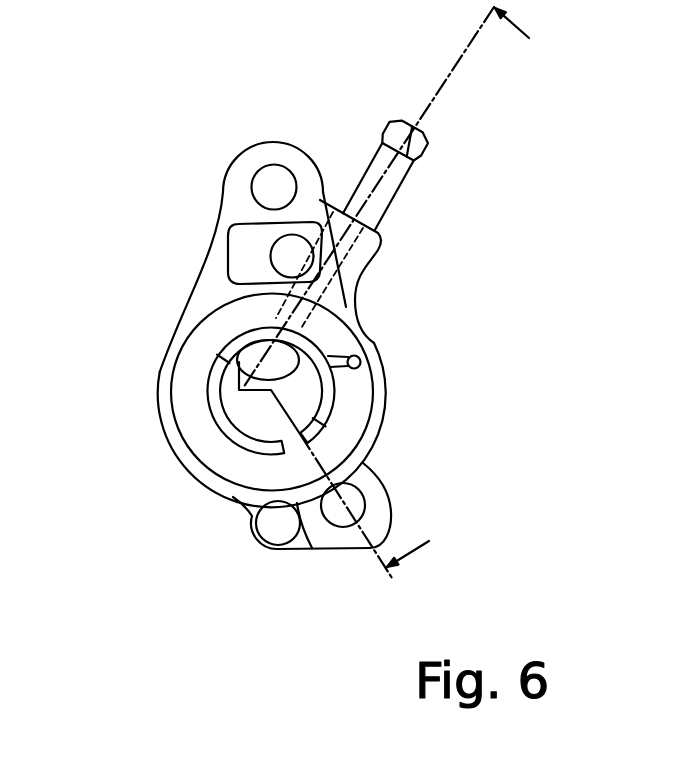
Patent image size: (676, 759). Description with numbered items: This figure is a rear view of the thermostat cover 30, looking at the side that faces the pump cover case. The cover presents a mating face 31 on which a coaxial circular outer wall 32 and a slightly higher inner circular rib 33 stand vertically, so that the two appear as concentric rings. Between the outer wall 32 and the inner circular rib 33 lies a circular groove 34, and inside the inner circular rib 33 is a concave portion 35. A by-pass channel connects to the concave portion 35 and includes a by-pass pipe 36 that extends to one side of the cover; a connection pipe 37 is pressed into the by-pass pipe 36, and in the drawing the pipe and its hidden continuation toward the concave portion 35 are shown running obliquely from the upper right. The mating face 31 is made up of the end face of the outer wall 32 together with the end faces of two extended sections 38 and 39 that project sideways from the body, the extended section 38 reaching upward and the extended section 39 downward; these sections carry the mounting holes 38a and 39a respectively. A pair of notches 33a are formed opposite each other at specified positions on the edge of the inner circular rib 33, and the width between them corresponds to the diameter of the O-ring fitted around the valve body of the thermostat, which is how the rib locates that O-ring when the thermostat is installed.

The thermostat cover 30 is at (172, 167).
The mating face 31 is at (158, 400).
The outer wall 32 is at (385, 362).
The inner circular rib 33 is at (205, 388).
The notches 33a is at (222, 358).
The circular groove 34 is at (195, 422).
The concave portion 35 is at (300, 405).
The by-pass pipe 36 is at (370, 258).
The connection pipe 37 is at (395, 193).
The extended section 38 is at (219, 222).
The mounting hole 38a is at (268, 184).
The extended section 39 is at (393, 490).
The mounting hole 39a is at (340, 520).